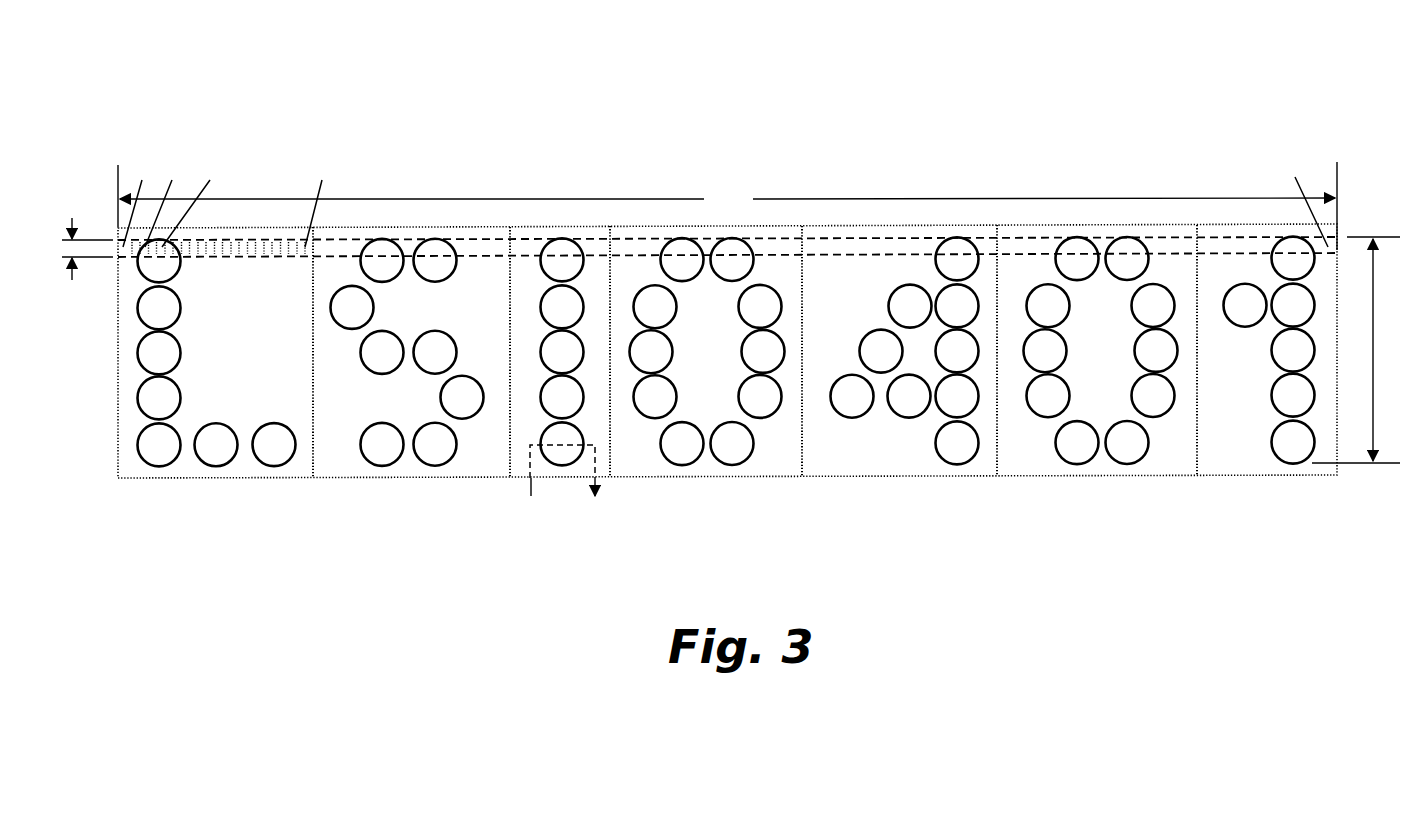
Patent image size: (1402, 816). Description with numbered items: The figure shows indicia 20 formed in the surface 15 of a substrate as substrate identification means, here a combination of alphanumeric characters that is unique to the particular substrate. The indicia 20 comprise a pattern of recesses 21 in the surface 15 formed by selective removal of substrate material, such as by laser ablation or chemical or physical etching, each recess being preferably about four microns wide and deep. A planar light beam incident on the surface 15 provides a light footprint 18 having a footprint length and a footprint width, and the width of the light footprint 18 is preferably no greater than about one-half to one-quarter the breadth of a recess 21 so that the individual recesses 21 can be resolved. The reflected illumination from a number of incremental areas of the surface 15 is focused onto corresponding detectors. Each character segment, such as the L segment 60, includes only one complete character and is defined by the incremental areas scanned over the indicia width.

The surface 15 is at (746, 97).
The light footprint 18 is at (868, 238).
The indicia 20 is at (1194, 94).
The recesses 21 is at (158, 467).
The character segment 60 is at (268, 478).